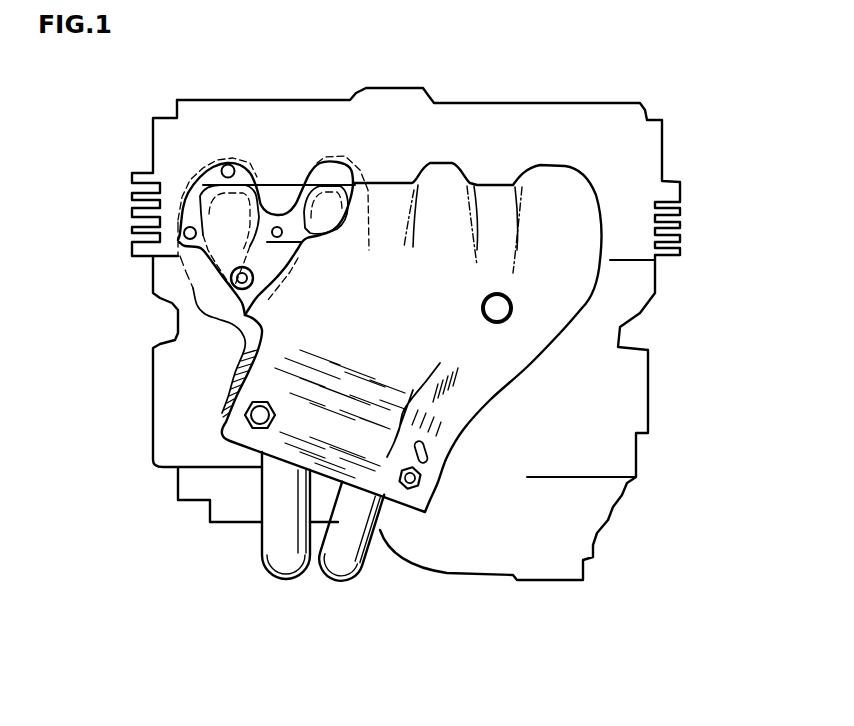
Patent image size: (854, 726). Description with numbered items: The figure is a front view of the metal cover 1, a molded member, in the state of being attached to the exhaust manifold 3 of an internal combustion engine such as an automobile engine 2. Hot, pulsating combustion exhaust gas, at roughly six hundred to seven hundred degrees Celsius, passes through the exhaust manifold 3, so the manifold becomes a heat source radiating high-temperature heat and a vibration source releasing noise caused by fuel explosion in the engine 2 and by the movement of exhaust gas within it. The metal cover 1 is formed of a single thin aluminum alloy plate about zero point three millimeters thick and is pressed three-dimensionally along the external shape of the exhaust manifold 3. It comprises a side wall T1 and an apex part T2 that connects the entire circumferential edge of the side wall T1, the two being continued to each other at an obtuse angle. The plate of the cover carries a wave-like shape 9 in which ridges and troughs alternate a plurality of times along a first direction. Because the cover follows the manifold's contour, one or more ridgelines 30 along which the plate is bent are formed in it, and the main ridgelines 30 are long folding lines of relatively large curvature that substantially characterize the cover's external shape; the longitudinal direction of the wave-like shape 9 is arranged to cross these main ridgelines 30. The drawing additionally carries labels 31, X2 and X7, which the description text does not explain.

The metal cover 1 is at (549, 218).
The engine 2 is at (194, 127).
The exhaust manifold 3 is at (228, 200).
The wave-like shape 9 is at (222, 420).
The ridgelines 30 is at (467, 207).
The bolt 31 is at (253, 418).
The side wall T1 is at (468, 388).
The apex part T2 is at (387, 313).
The section line X2 is at (340, 187).
The section line X7 is at (200, 360).